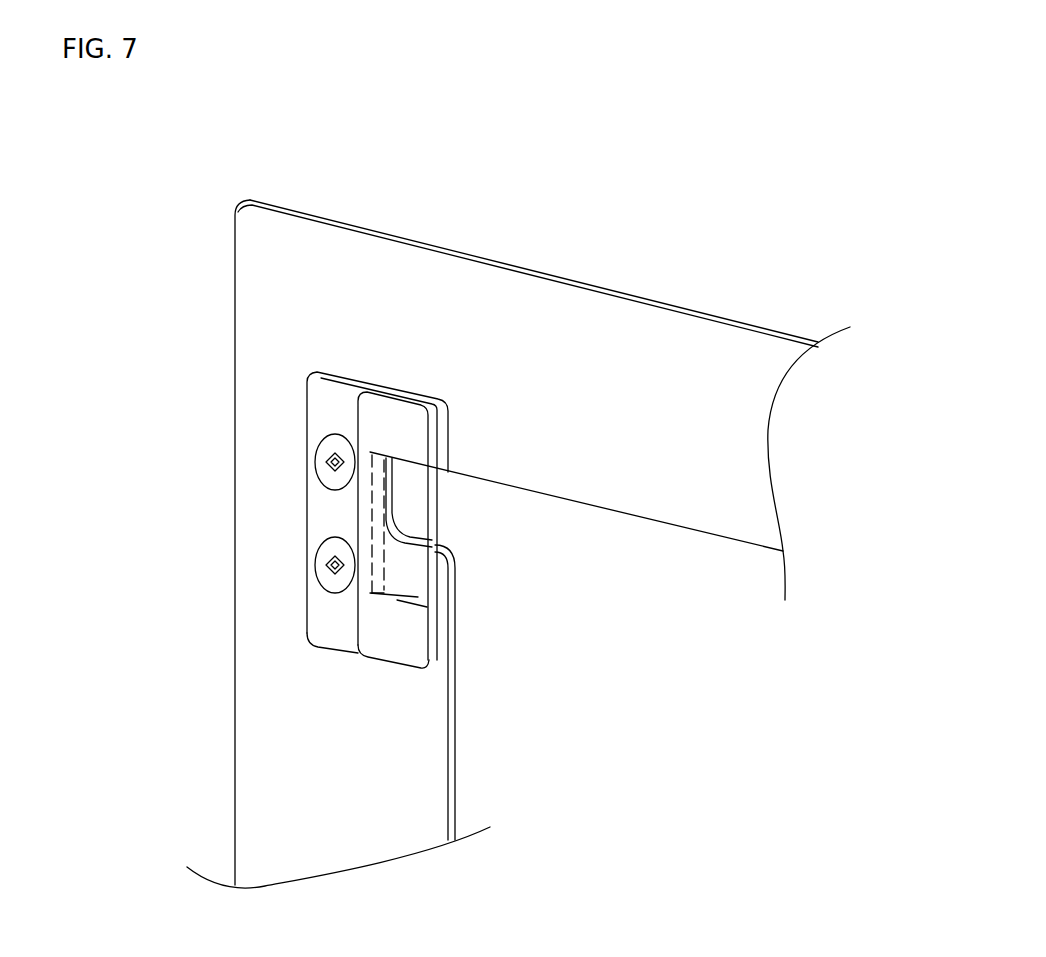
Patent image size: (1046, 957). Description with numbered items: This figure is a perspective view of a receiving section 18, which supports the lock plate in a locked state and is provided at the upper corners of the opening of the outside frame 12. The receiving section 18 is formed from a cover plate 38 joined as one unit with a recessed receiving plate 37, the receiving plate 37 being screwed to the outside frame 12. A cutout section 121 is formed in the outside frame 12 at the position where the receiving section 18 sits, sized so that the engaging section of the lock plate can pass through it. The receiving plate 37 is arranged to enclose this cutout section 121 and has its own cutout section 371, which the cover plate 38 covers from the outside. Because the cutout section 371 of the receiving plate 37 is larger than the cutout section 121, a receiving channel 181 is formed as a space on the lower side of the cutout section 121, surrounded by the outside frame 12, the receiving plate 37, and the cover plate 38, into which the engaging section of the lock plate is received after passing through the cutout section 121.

The outside frame 12 is at (537, 328).
The cutout section 121 is at (433, 548).
The receiving section 18 is at (308, 378).
The receiving plate 37 is at (333, 516).
The cover plate 38 is at (388, 628).
The receiving channel 181 is at (412, 572).
The cutout section 371 is at (455, 597).